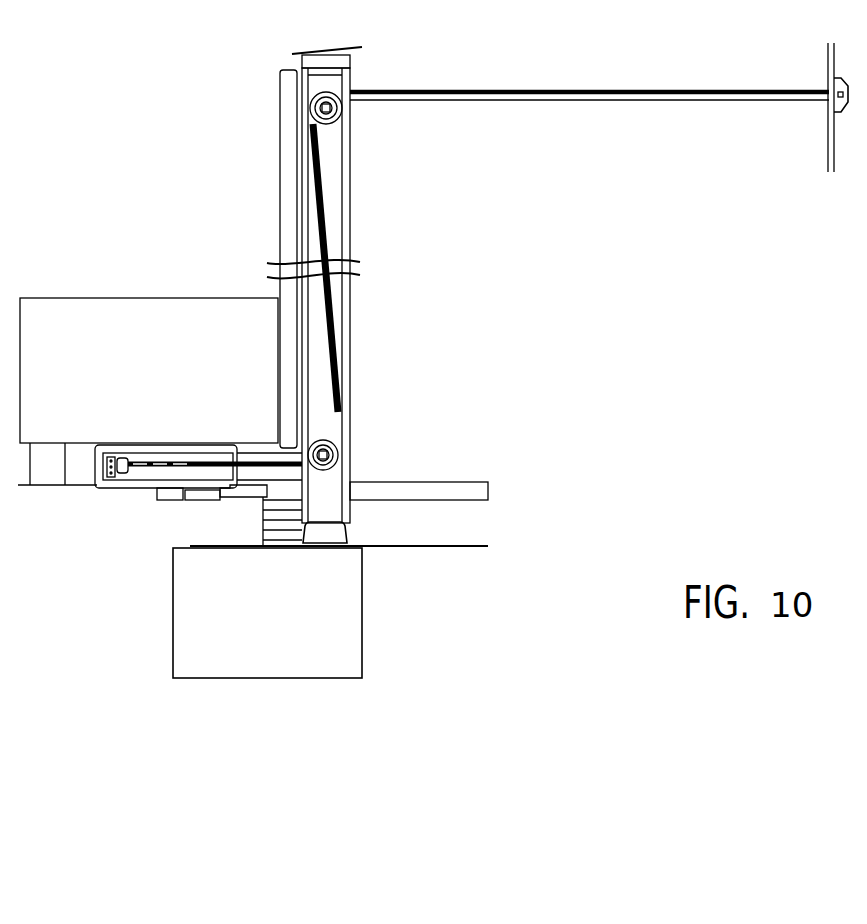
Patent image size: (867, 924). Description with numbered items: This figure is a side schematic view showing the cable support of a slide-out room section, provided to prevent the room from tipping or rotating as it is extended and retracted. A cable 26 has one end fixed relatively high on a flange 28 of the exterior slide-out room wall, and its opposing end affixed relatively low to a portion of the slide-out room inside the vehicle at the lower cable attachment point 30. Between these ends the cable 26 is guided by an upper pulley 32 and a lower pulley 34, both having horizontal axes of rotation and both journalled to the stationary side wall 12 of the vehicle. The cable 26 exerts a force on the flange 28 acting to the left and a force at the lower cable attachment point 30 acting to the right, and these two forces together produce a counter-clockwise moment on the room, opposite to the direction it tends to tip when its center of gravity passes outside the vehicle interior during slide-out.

The stationary side wall 12 is at (278, 95).
The cable 26 is at (587, 90).
The flange 28 is at (833, 102).
The lower cable attachment point 30 is at (182, 467).
The upper pulley 32 is at (334, 118).
The lower pulley 34 is at (318, 440).